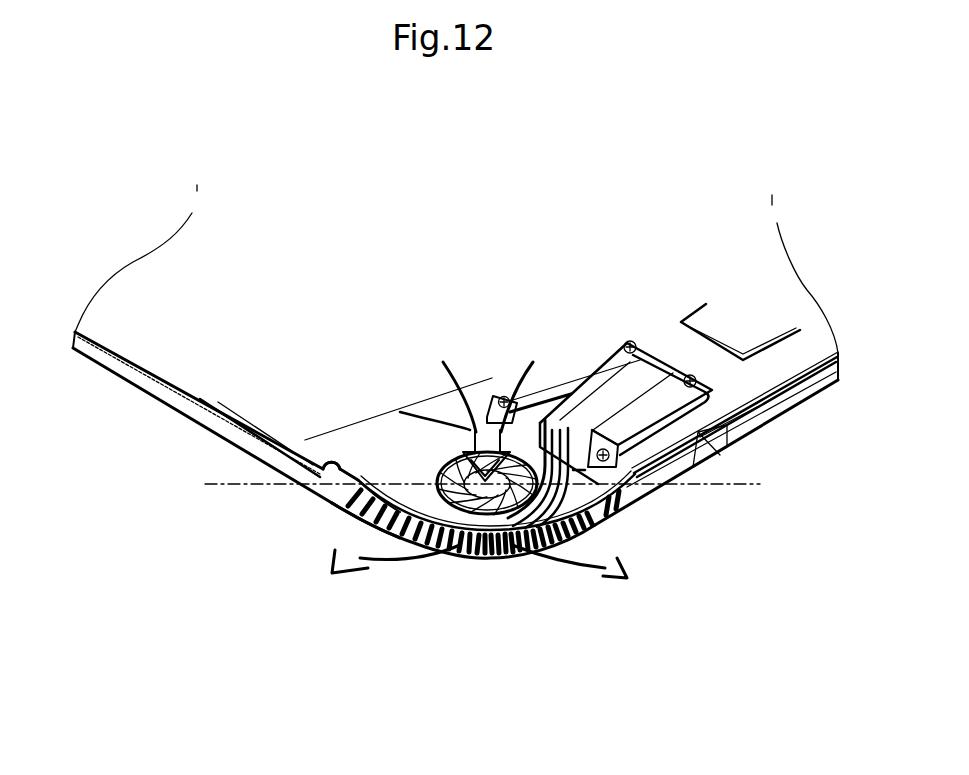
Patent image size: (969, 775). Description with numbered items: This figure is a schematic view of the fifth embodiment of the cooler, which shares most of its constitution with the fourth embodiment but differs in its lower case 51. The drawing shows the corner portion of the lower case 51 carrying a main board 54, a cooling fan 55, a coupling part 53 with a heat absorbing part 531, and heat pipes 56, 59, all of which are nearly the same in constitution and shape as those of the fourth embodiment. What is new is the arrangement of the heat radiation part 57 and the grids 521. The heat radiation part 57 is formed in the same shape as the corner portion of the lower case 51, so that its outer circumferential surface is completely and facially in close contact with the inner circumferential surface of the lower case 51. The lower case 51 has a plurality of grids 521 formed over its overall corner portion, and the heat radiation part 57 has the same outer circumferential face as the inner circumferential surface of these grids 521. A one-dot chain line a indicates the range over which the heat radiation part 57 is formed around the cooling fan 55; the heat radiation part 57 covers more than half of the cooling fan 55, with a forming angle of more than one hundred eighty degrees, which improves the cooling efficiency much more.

The lower case 51 is at (743, 427).
The coupling part 53 is at (582, 372).
The heat absorbing part 531 is at (645, 380).
The main board 54 is at (793, 367).
The cooling fan 55 is at (447, 456).
The heat pipe 56 is at (377, 482).
The heat radiation part 57 is at (447, 557).
The heat pipe 59 is at (615, 478).
The grids 521 is at (345, 497).
The one-dot chain line a is at (248, 484).